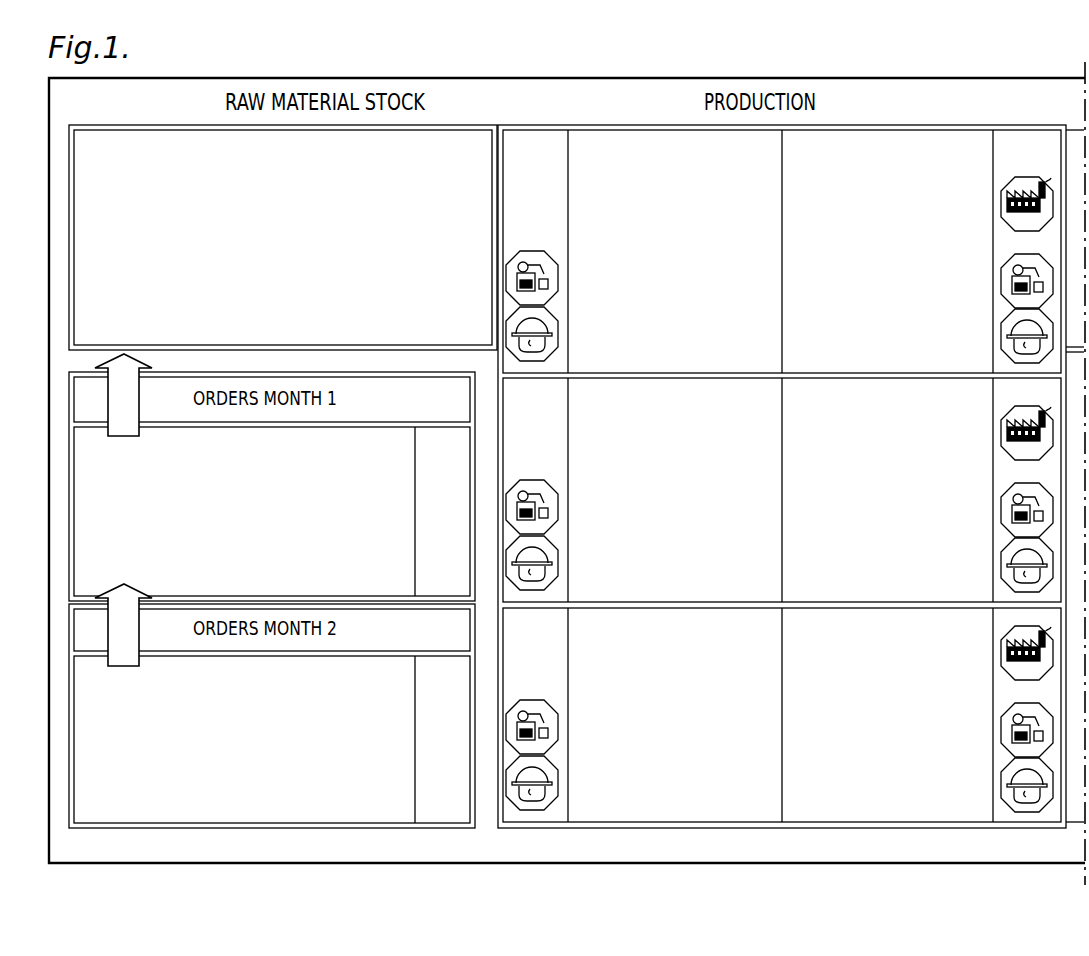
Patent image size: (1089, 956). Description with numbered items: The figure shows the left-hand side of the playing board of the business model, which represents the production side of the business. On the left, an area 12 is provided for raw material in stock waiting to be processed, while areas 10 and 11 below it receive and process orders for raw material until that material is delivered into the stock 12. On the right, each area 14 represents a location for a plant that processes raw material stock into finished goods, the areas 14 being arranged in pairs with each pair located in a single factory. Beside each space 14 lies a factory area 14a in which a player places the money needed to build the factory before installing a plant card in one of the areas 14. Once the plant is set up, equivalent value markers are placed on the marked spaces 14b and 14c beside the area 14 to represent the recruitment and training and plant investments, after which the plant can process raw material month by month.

The order area 10 is at (246, 729).
The order area 11 is at (254, 511).
The raw material stock area 12 is at (270, 245).
The plant area 14 is at (650, 255).
The factory area 14a is at (1002, 205).
The marked space 14b is at (1002, 283).
The marked space 14c is at (1002, 334).